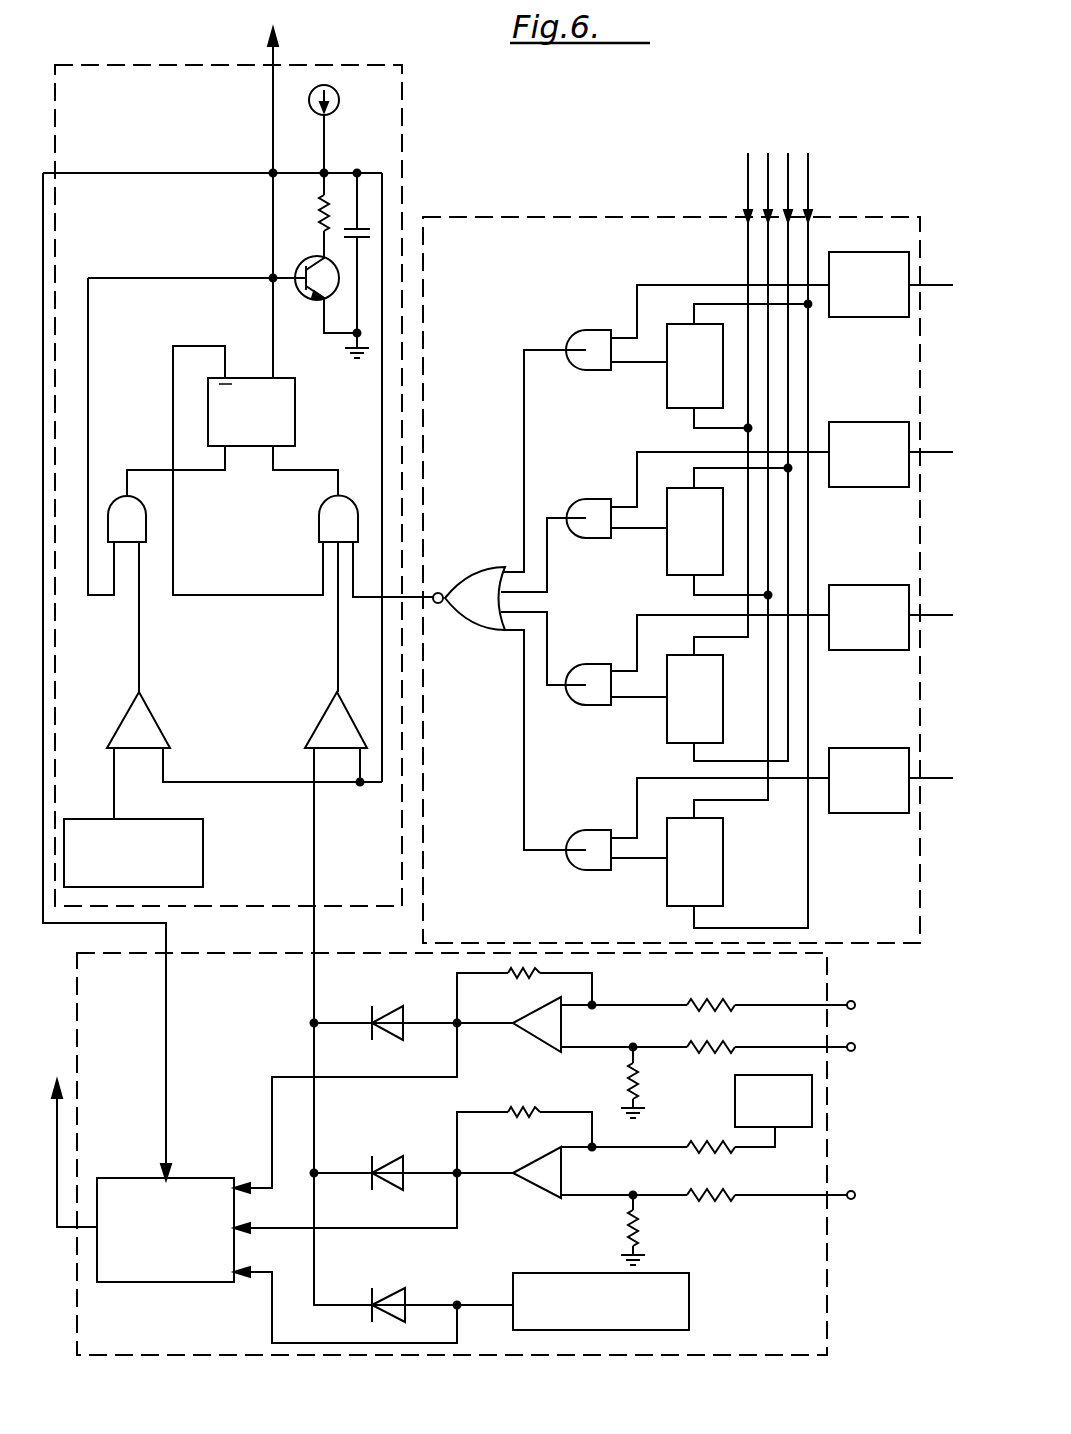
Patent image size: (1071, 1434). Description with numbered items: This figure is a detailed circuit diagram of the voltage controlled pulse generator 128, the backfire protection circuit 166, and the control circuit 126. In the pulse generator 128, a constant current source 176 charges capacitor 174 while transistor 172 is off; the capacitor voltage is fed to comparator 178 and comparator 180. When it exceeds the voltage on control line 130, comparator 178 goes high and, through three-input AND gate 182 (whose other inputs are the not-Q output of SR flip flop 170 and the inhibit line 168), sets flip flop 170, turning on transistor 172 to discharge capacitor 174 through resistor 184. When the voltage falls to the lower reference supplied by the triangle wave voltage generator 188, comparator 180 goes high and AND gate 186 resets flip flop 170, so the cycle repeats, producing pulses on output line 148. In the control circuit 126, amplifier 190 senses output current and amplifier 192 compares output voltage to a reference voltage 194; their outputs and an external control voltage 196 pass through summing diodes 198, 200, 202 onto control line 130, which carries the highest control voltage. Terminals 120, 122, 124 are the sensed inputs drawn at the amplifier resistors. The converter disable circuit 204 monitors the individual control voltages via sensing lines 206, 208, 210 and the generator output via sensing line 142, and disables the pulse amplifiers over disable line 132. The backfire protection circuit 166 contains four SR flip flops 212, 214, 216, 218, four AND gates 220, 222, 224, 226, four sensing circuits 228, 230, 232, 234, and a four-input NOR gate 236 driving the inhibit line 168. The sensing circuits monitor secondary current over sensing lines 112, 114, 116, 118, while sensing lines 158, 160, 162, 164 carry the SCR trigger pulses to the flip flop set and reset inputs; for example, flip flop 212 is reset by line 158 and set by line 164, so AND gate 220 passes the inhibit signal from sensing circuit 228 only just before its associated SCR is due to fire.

The sensing line 112 is at (930, 284).
The sensing line 114 is at (930, 451).
The sensing line 116 is at (930, 614).
The sensing line 118 is at (930, 777).
The input terminal 120 is at (855, 1005).
The input terminal 122 is at (855, 1047).
The input terminal 124 is at (855, 1195).
The control circuit 126 is at (827, 1290).
The voltage controlled pulse generator 128 is at (403, 160).
The control line 130 is at (316, 945).
The disable line 132 is at (58, 1137).
The sensing line 142 is at (168, 947).
The output line 148 is at (275, 70).
The sensing line 158 is at (748, 195).
The sensing line 160 is at (768, 165).
The sensing line 162 is at (788, 165).
The sensing line 164 is at (810, 192).
The backfire protection circuit 166 is at (600, 217).
The inhibit line 168 is at (412, 600).
The SR flip flop 170 is at (296, 417).
The transistor 172 is at (312, 300).
The capacitor 174 is at (365, 230).
The constant current source 176 is at (340, 100).
The comparator 178 is at (322, 716).
The comparator 180 is at (160, 728).
The AND gate 182 is at (352, 505).
The resistor 184 is at (318, 212).
The AND gate 186 is at (110, 505).
The triangle wave voltage generator 188 is at (203, 840).
The amplifier 190 is at (535, 1041).
The amplifier 192 is at (537, 1150).
The reference voltage 194 is at (735, 1089).
The external control voltage 196 is at (573, 1273).
The summing diode 198 is at (393, 1013).
The summing diode 200 is at (400, 1160).
The summing diode 202 is at (400, 1295).
The converter disable circuit 204 is at (212, 1183).
The sensing line 206 is at (388, 1082).
The sensing line 208 is at (388, 1232).
The sensing line 210 is at (326, 1338).
The SR flip flop 212 is at (667, 398).
The SR flip flop 214 is at (667, 558).
The SR flip flop 216 is at (667, 723).
The SR flip flop 218 is at (667, 885).
The AND gate 220 is at (589, 330).
The AND gate 222 is at (594, 499).
The AND gate 224 is at (589, 664).
The AND gate 226 is at (591, 830).
The sensing circuit 228 is at (888, 246).
The sensing circuit 230 is at (882, 422).
The sensing circuit 232 is at (872, 585).
The sensing circuit 234 is at (874, 748).
The NOR gate 236 is at (478, 557).